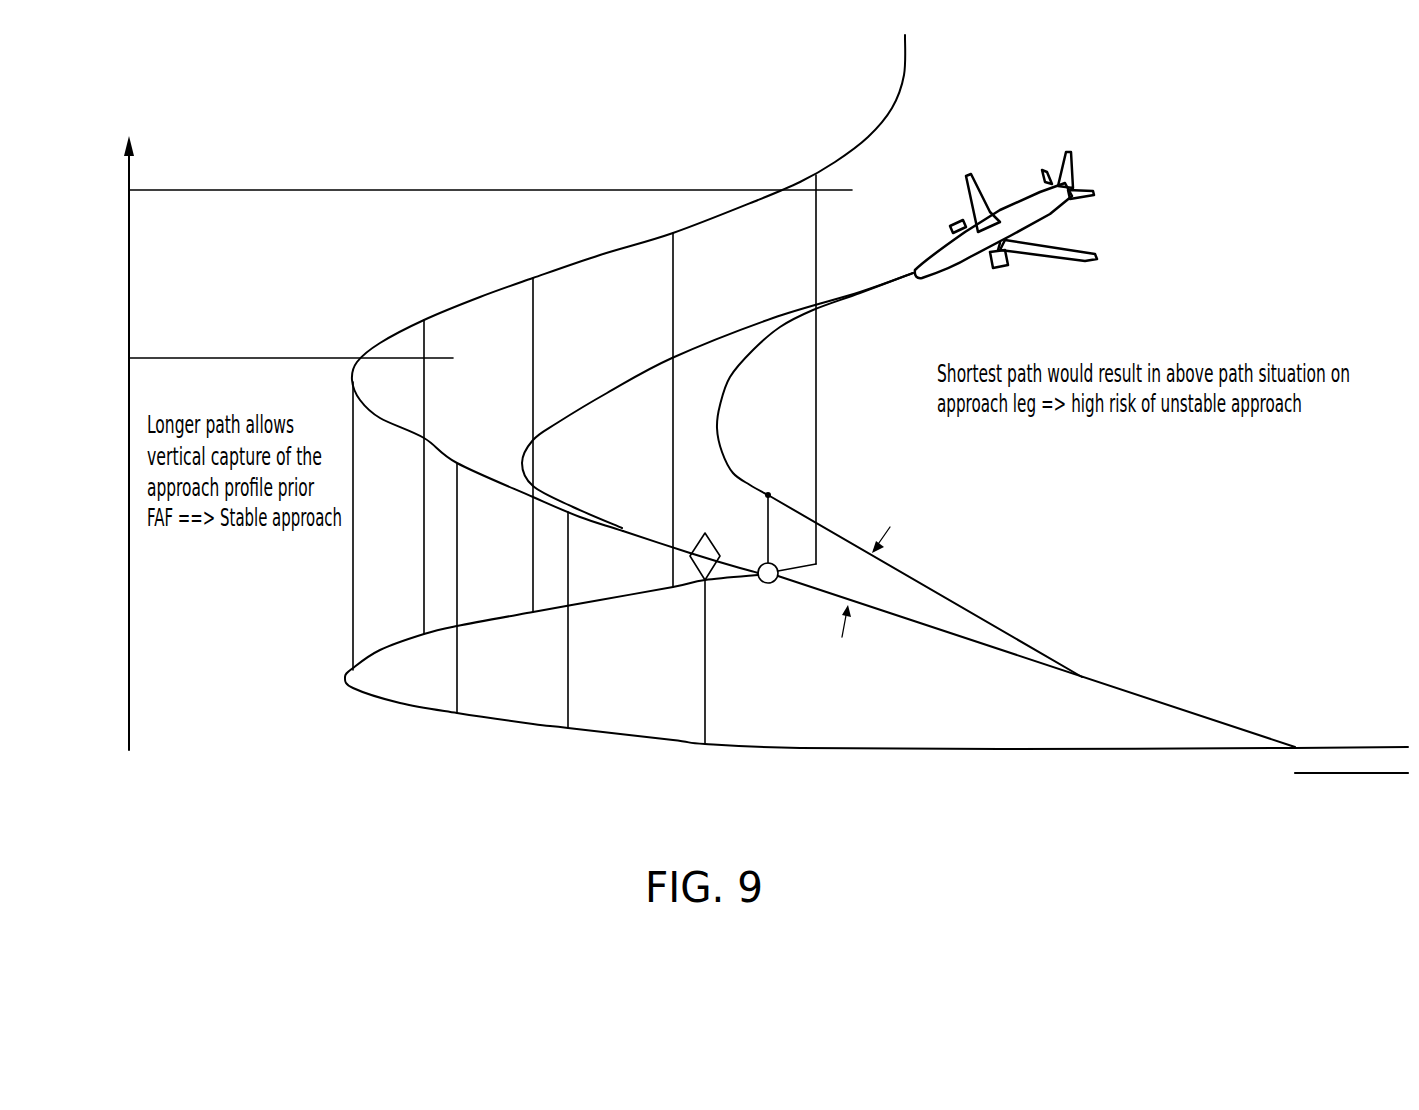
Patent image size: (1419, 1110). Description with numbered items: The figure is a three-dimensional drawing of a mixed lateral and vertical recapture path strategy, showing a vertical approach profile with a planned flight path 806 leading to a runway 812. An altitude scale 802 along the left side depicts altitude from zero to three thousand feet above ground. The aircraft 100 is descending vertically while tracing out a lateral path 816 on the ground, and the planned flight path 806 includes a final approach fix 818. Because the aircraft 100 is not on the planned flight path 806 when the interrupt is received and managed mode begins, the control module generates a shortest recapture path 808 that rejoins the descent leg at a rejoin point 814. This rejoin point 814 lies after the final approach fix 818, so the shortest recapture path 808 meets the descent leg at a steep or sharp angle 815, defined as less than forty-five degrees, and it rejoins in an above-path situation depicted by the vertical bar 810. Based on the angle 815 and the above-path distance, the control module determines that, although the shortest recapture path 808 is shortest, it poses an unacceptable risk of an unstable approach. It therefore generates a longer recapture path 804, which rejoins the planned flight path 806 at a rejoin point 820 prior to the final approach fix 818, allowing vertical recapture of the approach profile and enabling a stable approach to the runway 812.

The aircraft 100 is at (1069, 152).
The altitude scale 802 is at (133, 76).
The longer recapture path 804 is at (763, 318).
The planned flight path 806 is at (858, 140).
The shortest recapture path 808 is at (720, 426).
The vertical bar 810 is at (769, 522).
The runway 812 is at (1350, 746).
The rejoin point of shortest recapture path 814 is at (1083, 676).
The steep and/or sharp angle 815 is at (864, 582).
The lateral path 816 is at (400, 706).
The final approach fix 818 is at (696, 575).
The rejoin point of longer recapture path 820 is at (625, 528).